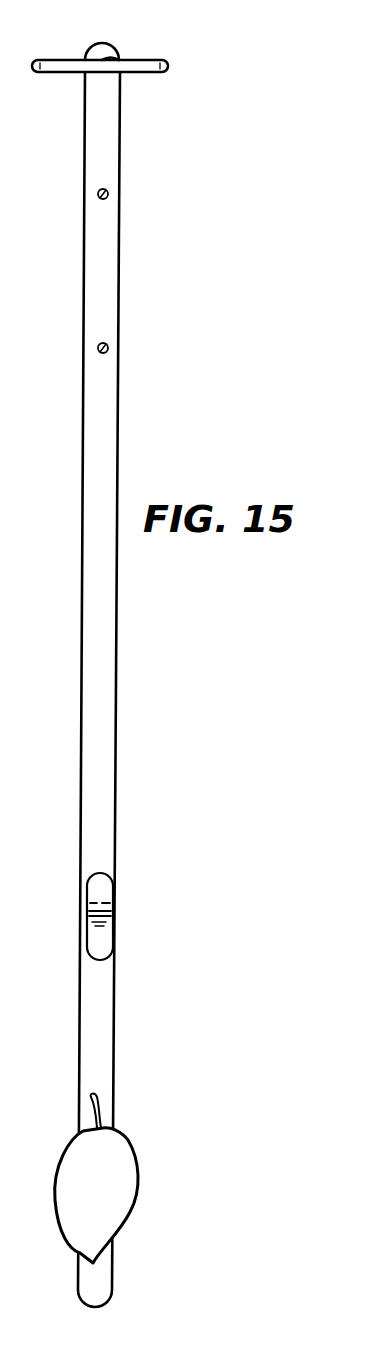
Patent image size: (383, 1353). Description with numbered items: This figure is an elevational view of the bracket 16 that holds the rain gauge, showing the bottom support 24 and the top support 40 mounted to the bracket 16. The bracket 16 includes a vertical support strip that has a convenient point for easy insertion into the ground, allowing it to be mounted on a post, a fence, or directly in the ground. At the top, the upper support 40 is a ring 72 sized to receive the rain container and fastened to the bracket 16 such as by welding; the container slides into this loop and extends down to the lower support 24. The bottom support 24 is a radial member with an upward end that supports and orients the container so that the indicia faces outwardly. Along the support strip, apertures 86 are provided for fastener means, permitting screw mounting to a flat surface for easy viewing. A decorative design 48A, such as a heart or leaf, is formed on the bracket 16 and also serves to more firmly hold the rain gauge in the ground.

The bracket 16 is at (104, 432).
The ring 72 is at (145, 62).
The upper support 40 is at (200, 86).
The apertures 86 is at (108, 192).
The bottom support 24 is at (108, 940).
The balloon 48A is at (118, 1160).